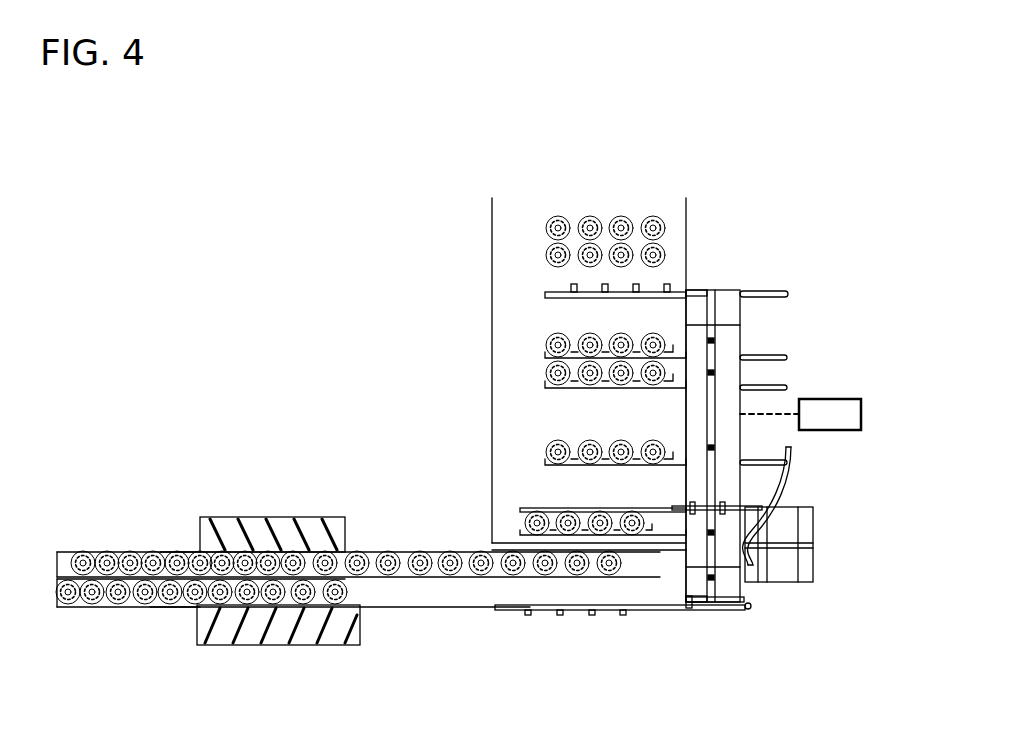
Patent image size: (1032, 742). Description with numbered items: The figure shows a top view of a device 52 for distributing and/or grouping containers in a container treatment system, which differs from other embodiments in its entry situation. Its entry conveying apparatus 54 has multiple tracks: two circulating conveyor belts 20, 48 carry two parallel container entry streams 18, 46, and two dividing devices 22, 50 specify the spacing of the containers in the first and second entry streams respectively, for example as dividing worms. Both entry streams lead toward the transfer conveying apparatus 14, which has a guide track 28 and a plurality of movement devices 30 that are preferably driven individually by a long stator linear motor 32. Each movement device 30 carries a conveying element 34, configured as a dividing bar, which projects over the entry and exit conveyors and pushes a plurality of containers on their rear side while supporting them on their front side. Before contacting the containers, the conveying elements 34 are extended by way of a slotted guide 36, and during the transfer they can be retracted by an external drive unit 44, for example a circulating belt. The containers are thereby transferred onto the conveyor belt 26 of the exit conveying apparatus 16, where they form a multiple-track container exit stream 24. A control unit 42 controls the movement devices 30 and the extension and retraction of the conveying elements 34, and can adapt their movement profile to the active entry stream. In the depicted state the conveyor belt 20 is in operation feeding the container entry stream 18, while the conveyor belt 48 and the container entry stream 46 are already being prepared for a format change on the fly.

The transfer conveying apparatus 14 is at (835, 563).
The exit conveying apparatus 16 is at (440, 236).
The container entry stream 18 is at (108, 545).
The conveyor belt 20 is at (182, 550).
The dividing device 22 is at (283, 517).
The container exit stream 24 is at (527, 240).
The conveyor belt 26 is at (492, 305).
The guide track 28 is at (702, 341).
The movement devices 30 is at (703, 500).
The long stator linear motor 32 is at (710, 370).
The conveying element 34 is at (545, 463).
The slotted guide 36 is at (788, 468).
The control unit 42 is at (861, 414).
The drive unit 44 is at (790, 578).
The container entry stream 46 is at (105, 613).
The conveyor belt 48 is at (177, 604).
The dividing device 50 is at (283, 645).
The device 52 is at (487, 120).
The entry conveying apparatus 54 is at (150, 400).